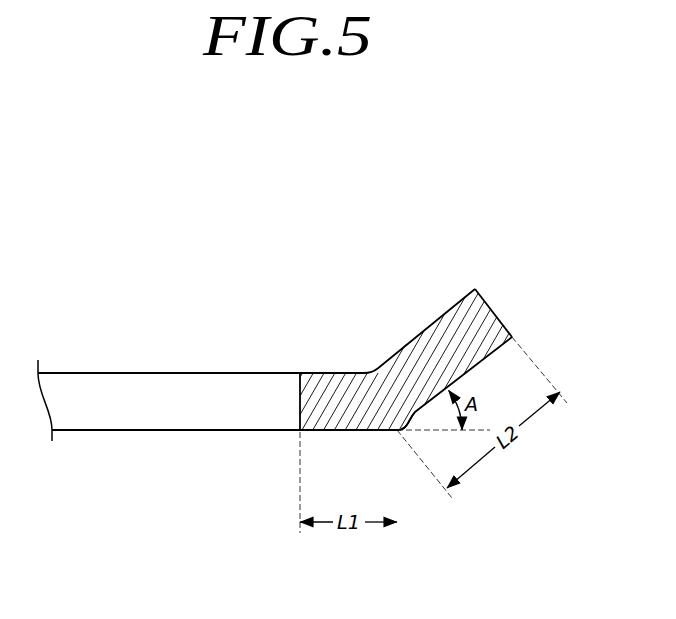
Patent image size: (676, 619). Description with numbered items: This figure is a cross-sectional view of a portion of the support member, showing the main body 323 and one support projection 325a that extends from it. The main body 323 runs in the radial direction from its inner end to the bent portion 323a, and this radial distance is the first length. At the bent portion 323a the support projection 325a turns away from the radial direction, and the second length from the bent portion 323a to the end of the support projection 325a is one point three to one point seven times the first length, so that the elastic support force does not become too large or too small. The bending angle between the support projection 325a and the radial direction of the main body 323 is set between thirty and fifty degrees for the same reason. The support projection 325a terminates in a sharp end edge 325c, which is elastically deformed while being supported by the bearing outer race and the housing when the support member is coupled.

The main body 323 is at (320, 431).
The bent portion 323a is at (397, 425).
The support projection 325a is at (443, 355).
The end edge 325c is at (475, 289).